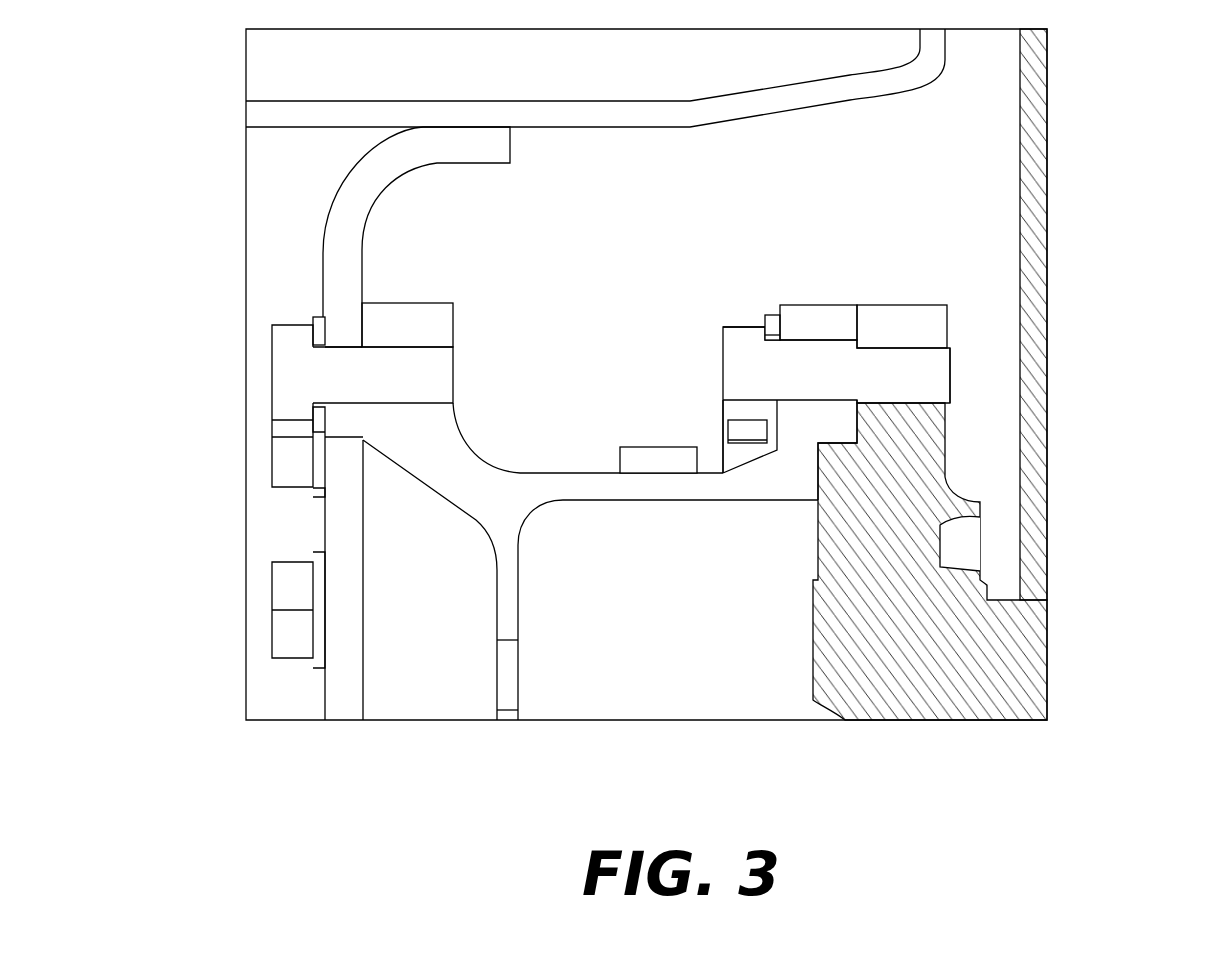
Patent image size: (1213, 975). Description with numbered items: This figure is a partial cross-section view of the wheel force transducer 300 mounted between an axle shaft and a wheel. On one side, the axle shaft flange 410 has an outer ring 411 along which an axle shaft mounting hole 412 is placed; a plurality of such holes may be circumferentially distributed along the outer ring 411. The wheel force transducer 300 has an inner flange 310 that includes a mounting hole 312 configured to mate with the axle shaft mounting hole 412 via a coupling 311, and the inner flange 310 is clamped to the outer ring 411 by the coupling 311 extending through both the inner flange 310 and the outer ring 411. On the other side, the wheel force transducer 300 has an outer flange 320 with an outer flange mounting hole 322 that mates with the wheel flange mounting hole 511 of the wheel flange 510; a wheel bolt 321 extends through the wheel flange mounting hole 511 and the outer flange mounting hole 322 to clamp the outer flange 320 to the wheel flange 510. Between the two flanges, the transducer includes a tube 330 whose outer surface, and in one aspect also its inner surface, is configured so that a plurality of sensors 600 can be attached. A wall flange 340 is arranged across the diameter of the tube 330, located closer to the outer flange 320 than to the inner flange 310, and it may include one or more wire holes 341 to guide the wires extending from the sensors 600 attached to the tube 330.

The wheel force transducer 300 is at (571, 464).
The inner flange 310 is at (805, 303).
The coupling 311 is at (723, 393).
The mounting hole 312 is at (763, 318).
The outer flange 320 is at (453, 310).
The wheel bolt 321 is at (272, 385).
The outer flange mounting hole 322 is at (453, 346).
The tube 330 is at (683, 503).
The wall flange 340 is at (519, 570).
The wire hole 341 is at (520, 633).
The axle shaft flange 410 is at (918, 672).
The outer ring 411 is at (880, 303).
The axle shaft mounting hole 412 is at (947, 347).
The wheel flange 510 is at (347, 197).
The wheel flange mounting hole 511 is at (345, 340).
The sensor 600 is at (650, 446).